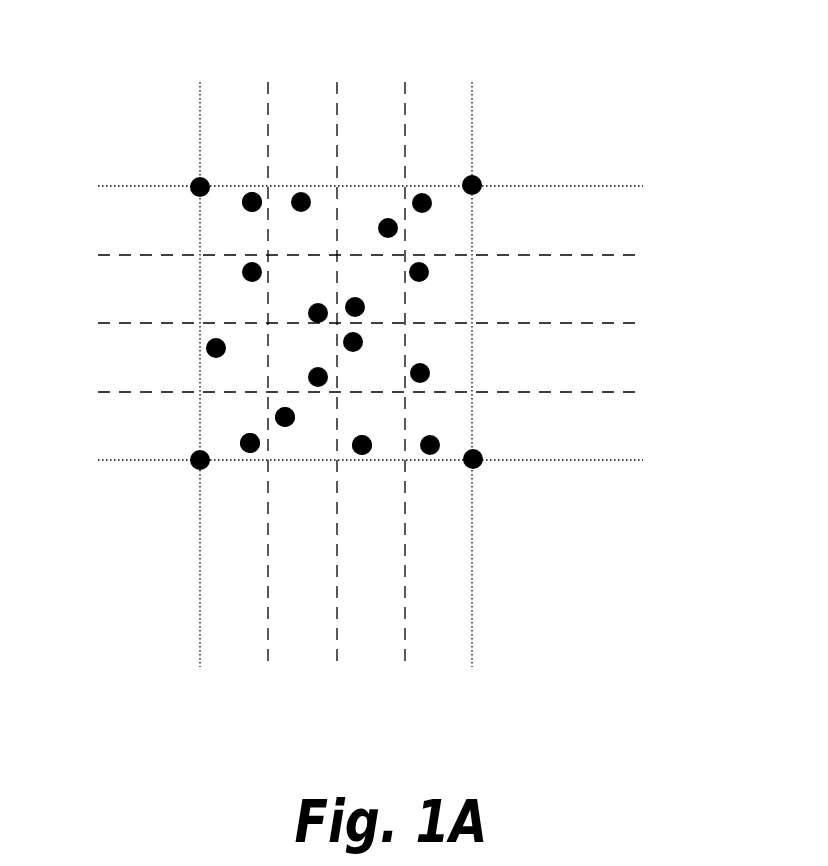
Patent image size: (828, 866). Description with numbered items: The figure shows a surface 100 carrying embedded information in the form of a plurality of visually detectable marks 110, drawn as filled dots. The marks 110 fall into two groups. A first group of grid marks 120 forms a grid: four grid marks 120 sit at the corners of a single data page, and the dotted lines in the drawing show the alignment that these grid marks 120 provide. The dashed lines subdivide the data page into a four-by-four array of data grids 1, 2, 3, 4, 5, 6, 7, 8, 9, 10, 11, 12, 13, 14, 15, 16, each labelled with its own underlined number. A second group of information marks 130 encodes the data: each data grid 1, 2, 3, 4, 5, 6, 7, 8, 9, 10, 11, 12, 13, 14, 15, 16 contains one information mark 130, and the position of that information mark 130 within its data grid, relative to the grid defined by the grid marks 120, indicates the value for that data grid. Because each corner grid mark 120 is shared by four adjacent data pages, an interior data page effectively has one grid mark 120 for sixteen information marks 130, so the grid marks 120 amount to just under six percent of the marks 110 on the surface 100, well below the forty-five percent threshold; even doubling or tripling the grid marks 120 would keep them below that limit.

The surface 100 is at (357, 35).
The visually detectable marks 110 is at (248, 192).
The grid marks 120 is at (481, 180).
The information marks 130 is at (286, 430).
The data grid 1 is at (222, 244).
The data grid 2 is at (290, 244).
The data grid 3 is at (360, 243).
The data grid 4 is at (427, 243).
The data grid 5 is at (224, 308).
The data grid 6 is at (290, 306).
The data grid 7 is at (359, 306).
The data grid 8 is at (427, 304).
The data grid 9 is at (224, 373).
The data grid 10 is at (294, 369).
The data grid 11 is at (362, 369).
The data grid 12 is at (430, 369).
The data grid 13 is at (227, 434).
The data grid 14 is at (294, 434).
The data grid 15 is at (362, 434).
The data grid 16 is at (430, 434).